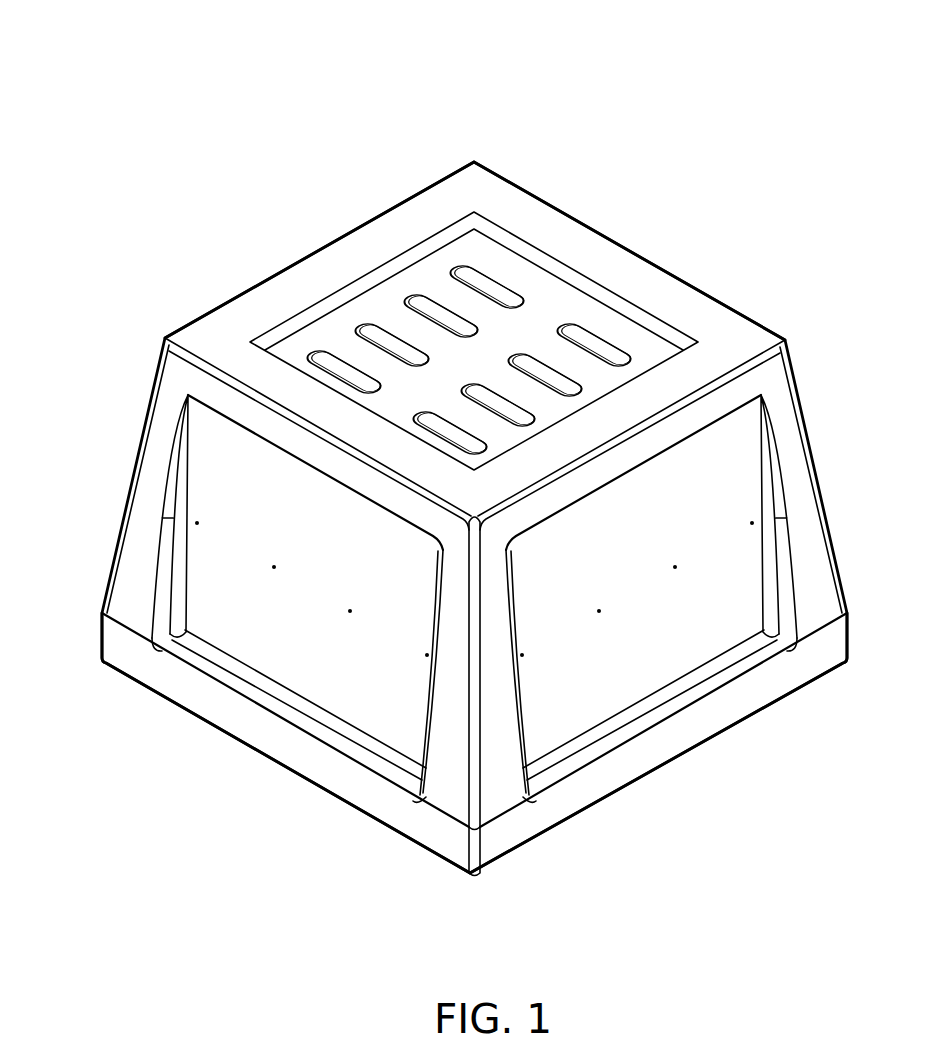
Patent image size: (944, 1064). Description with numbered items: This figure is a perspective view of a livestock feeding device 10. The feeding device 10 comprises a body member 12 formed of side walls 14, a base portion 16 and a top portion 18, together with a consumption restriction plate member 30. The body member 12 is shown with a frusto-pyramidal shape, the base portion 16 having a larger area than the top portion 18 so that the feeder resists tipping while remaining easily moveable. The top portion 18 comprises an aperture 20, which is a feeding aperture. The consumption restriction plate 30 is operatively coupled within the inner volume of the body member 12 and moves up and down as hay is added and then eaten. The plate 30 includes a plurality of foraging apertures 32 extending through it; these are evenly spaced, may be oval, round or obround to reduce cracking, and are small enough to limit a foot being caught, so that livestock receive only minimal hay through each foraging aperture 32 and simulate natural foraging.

The livestock feeding device 10 is at (708, 84).
The body member 12 is at (793, 418).
The side walls 14 is at (232, 582).
The base portion 16 is at (528, 836).
The top portion 18 is at (313, 272).
The aperture 20 is at (578, 310).
The consumption restriction plate member 30 is at (330, 337).
The foraging apertures 32 is at (487, 282).